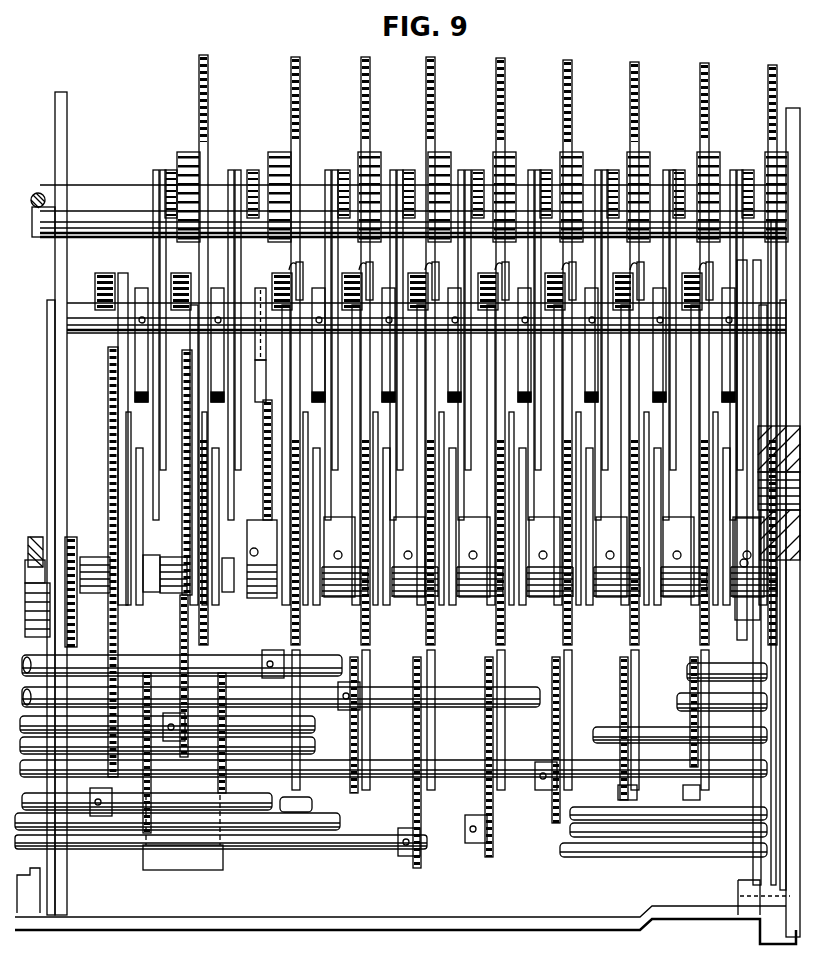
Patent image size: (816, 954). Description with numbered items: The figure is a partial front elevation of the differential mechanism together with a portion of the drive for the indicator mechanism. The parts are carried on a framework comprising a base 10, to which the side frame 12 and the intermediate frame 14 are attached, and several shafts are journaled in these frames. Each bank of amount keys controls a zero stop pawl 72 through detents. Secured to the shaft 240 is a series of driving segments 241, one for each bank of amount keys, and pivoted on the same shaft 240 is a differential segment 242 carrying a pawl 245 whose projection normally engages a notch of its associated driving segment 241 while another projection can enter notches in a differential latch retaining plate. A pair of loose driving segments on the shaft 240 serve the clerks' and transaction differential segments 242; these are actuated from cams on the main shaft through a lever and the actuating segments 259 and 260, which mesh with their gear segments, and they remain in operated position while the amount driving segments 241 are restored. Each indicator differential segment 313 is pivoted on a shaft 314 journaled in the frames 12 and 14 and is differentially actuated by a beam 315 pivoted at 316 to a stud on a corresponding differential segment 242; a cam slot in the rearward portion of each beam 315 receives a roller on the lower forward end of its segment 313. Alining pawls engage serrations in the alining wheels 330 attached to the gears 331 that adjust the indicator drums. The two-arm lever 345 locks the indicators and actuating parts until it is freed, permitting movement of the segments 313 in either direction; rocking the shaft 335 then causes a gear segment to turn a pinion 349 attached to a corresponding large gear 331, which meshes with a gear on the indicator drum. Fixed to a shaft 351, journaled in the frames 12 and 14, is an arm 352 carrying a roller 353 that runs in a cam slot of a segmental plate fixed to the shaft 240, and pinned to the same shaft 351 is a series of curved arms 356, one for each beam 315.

The base 10 is at (525, 922).
The side frame 12 is at (786, 112).
The intermediate frame 14 is at (68, 102).
The zero stop pawl 72 is at (714, 280).
The shaft 240 is at (38, 536).
The driving segment 241 is at (108, 410).
The differential segment 242 is at (131, 434).
The pawl 245 is at (105, 274).
The actuating segment 259 is at (178, 600).
The actuating segment 260 is at (95, 590).
The indicator differential segment 313 is at (160, 170).
The shaft 314 is at (45, 193).
The beam 315 is at (143, 478).
The pivot 316 is at (150, 555).
The alining wheel 330 is at (200, 154).
The gear 331 is at (208, 82).
The shaft 335 is at (263, 450).
The two-arm lever 345 is at (154, 170).
The pinion 349 is at (250, 170).
The shaft 351 is at (68, 335).
The arm 352 is at (256, 358).
The roller 353 is at (255, 372).
The curved arm 356 is at (148, 370).